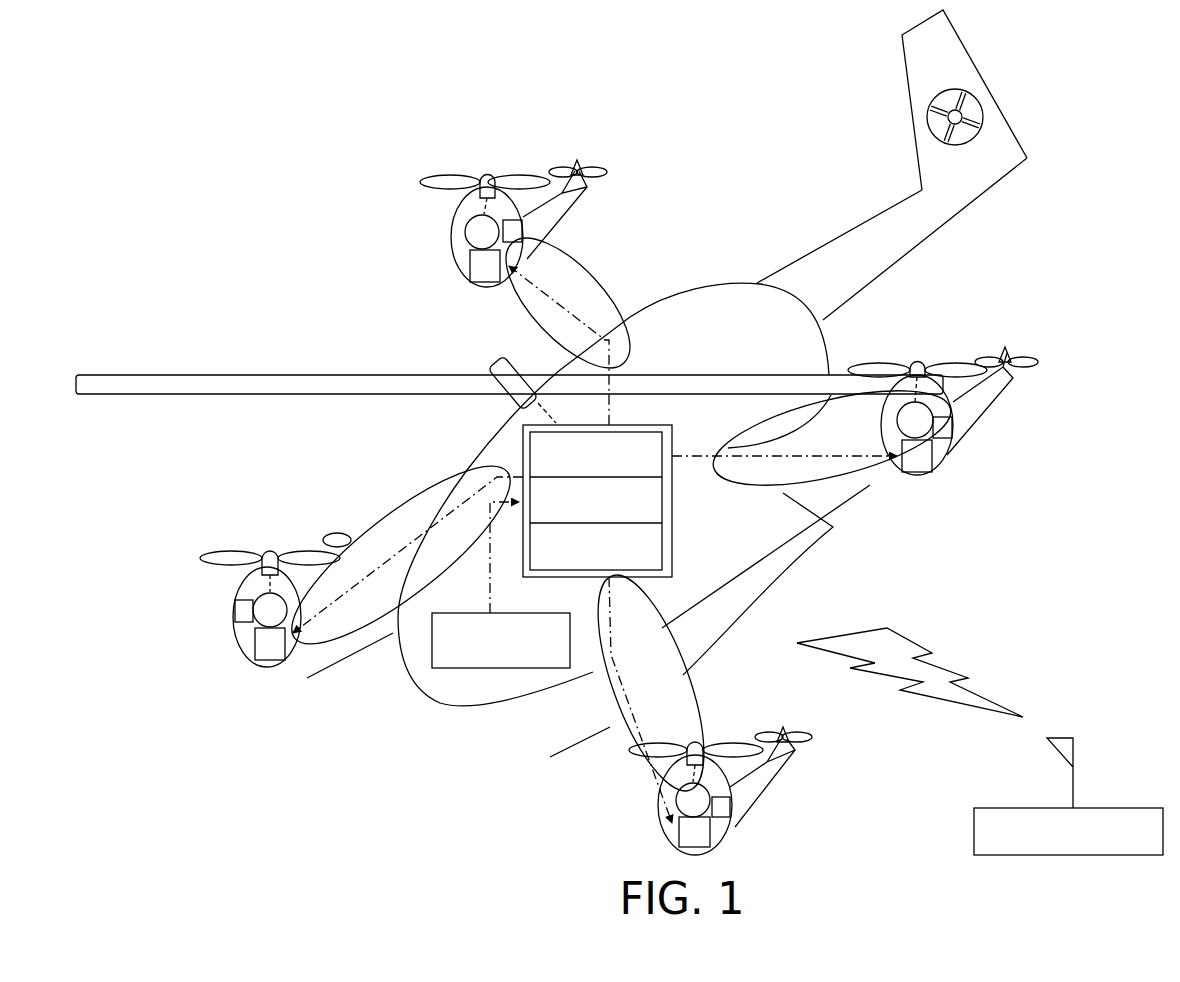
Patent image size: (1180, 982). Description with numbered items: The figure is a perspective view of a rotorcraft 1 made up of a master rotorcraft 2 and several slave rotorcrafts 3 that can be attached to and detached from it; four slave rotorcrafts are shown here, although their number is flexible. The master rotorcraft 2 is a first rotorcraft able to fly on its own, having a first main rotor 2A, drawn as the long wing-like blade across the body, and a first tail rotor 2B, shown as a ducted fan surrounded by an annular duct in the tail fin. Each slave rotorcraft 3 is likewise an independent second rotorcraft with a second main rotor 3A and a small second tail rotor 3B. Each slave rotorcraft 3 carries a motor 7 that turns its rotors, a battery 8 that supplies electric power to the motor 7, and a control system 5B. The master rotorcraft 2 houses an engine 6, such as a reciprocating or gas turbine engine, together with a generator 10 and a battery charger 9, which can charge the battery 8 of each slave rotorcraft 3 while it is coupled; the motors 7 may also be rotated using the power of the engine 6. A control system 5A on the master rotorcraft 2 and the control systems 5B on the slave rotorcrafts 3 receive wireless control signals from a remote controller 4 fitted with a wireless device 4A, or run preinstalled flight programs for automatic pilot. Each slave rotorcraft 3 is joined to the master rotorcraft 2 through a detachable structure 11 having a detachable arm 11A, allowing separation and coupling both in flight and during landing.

The rotorcraft 1 is at (314, 194).
The master rotorcraft 2 is at (690, 279).
The first main rotor 2A is at (270, 375).
The first tail rotor 2B is at (977, 98).
The slave rotorcraft 3 is at (503, 172).
The second main rotor 3A is at (485, 146).
The second tail rotor 3B is at (589, 137).
The controller 4 is at (1002, 807).
The wireless device 4A is at (1076, 755).
The control system 5A is at (453, 668).
The control system 5B is at (572, 237).
The engine 6 is at (522, 440).
The motor 7 is at (438, 219).
The battery 8 is at (438, 256).
The battery charger 9 is at (662, 547).
The generator 10 is at (662, 503).
The detachable structure 11 is at (517, 290).
The detachable arm 11A is at (557, 322).